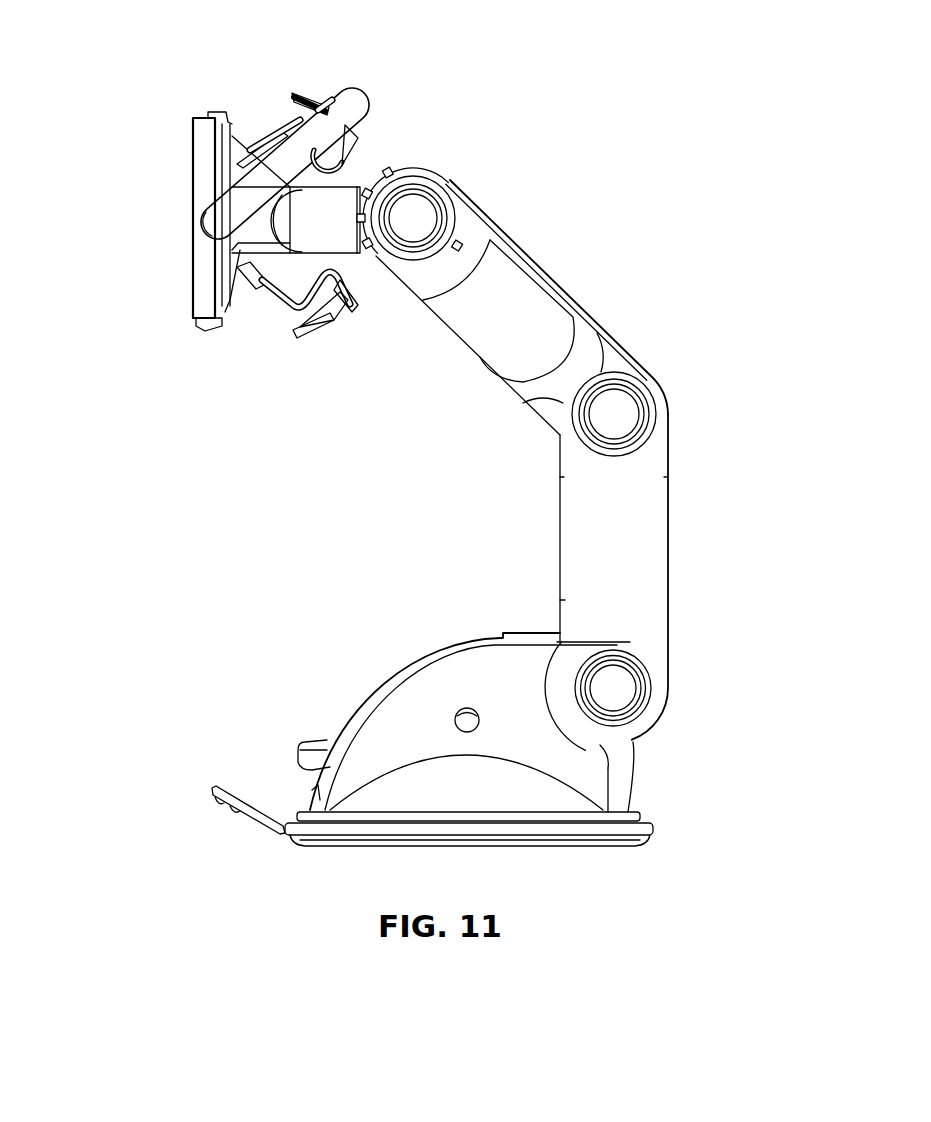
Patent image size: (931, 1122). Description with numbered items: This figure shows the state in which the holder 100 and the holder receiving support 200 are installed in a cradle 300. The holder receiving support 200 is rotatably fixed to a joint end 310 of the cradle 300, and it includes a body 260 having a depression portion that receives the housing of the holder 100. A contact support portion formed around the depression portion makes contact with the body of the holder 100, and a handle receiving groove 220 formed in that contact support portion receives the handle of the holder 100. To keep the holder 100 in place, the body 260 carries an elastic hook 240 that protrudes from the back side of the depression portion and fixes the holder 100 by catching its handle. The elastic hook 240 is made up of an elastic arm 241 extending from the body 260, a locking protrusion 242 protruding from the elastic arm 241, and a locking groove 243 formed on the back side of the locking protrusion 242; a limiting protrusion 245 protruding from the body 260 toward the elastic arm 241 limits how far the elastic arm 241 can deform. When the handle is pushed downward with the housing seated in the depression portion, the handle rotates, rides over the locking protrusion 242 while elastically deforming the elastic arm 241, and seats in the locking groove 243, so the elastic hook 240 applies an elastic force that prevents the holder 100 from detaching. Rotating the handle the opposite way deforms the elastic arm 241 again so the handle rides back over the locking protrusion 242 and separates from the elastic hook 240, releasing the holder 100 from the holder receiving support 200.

The holder 100 is at (168, 252).
The holder receiving support 200 is at (217, 92).
The handle receiving groove 220 is at (215, 212).
The elastic hook 240 is at (320, 82).
The elastic arm 241 is at (297, 340).
The locking protrusion 242 is at (327, 335).
The locking groove 243 is at (347, 313).
The limiting protrusion 245 is at (297, 118).
The body 260 is at (278, 222).
The cradle 300 is at (713, 453).
The joint end 310 is at (477, 221).